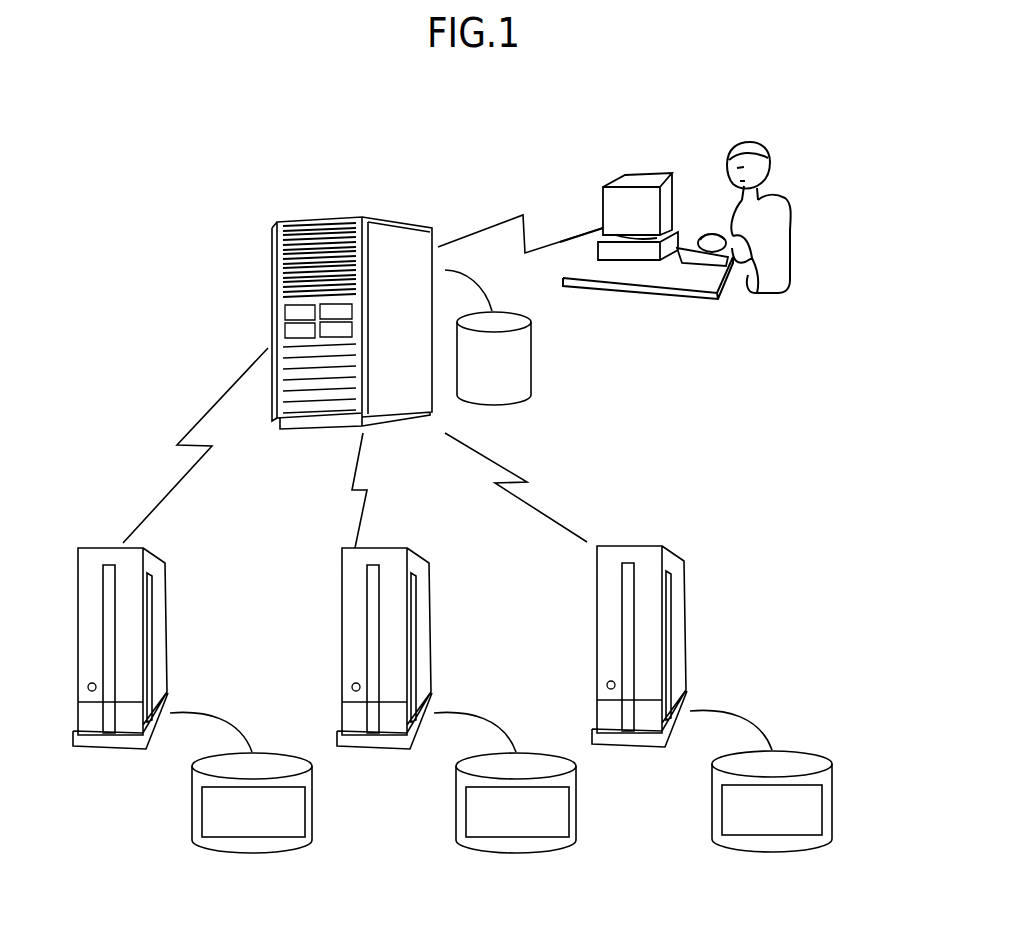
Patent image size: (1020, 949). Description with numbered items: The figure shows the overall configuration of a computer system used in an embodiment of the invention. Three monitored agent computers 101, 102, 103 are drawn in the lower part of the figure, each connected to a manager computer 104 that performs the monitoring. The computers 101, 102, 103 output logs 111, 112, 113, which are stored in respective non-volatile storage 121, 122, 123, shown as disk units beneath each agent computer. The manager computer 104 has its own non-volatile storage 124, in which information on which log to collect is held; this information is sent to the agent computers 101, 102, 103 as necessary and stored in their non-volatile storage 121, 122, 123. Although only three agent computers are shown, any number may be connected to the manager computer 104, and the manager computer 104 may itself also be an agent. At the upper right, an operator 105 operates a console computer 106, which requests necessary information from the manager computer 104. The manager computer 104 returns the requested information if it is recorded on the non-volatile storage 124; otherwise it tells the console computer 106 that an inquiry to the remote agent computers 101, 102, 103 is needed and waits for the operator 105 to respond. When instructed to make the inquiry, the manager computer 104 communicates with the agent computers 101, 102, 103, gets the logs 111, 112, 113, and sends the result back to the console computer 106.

The computer 101 is at (163, 625).
The computer 102 is at (427, 625).
The computer 103 is at (682, 623).
The manager computer 104 is at (341, 218).
The operator 105 is at (790, 279).
The console computer 106 is at (655, 294).
The log 111 is at (305, 805).
The log 112 is at (569, 805).
The log 113 is at (822, 803).
The non-volatile storage 121 is at (252, 855).
The non-volatile storage 122 is at (516, 855).
The non-volatile storage 123 is at (772, 853).
The non-volatile storage 124 is at (533, 368).